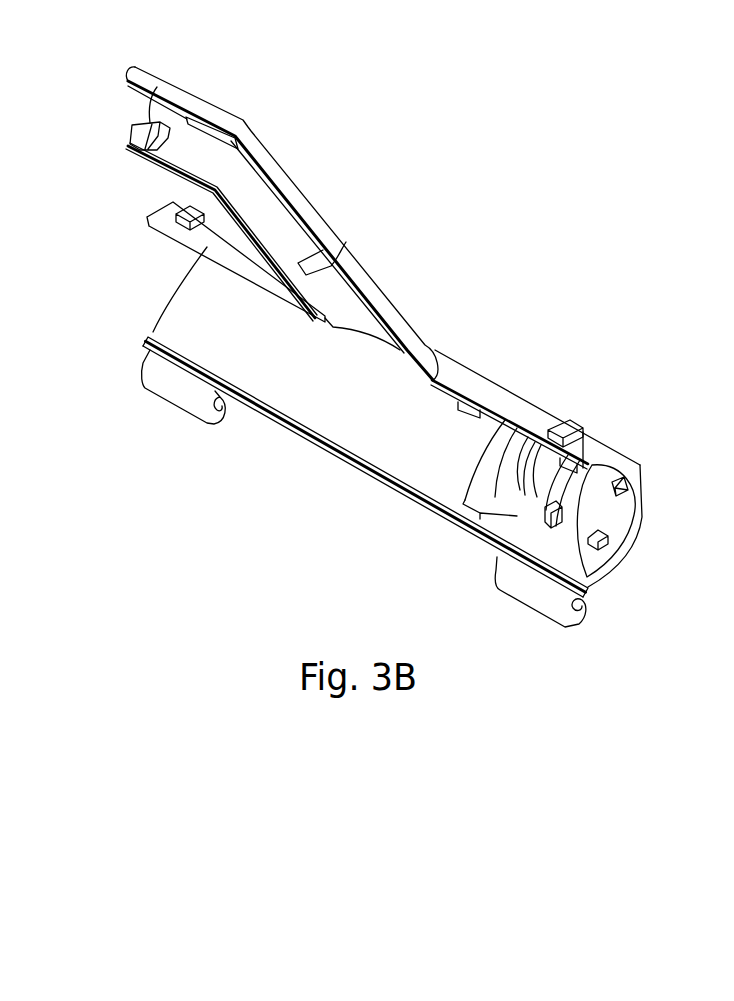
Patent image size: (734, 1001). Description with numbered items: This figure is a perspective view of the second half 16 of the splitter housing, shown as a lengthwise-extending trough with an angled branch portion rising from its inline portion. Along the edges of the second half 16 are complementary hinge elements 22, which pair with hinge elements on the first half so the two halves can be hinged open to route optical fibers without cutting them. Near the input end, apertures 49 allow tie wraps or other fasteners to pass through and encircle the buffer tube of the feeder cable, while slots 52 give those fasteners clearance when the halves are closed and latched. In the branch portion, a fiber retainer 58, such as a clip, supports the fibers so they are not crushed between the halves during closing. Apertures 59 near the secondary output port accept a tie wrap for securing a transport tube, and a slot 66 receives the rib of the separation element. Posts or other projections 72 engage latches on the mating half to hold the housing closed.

The second half 16 is at (497, 397).
The hinge element 22 is at (197, 400).
The apertures 49 is at (613, 503).
The slots 52 is at (522, 496).
The fiber retainer 58 is at (315, 259).
The apertures 59 is at (145, 123).
The slot 66 is at (207, 118).
The posts or other projections 72 is at (197, 215).